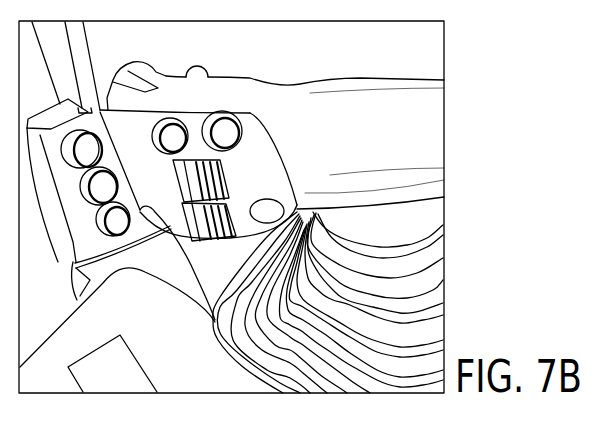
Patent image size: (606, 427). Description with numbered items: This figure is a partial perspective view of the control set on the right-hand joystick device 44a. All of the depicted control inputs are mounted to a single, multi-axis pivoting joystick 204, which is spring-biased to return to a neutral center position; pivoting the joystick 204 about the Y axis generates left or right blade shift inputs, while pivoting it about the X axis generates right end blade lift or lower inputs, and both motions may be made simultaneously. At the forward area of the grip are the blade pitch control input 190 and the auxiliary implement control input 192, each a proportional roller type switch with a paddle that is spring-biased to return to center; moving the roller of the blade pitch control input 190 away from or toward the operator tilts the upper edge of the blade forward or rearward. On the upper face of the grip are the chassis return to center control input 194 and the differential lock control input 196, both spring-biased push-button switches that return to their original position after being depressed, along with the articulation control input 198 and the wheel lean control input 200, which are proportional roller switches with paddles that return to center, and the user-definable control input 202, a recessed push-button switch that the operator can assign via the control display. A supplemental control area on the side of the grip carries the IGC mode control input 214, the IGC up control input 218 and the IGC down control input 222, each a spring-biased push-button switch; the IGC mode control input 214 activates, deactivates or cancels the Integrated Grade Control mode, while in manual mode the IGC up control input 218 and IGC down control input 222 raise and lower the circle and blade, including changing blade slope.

The right-hand joystick device 44a is at (394, 82).
The blade pitch control input 190 is at (200, 68).
The auxiliary implement control input 192 is at (127, 72).
The chassis return to center control input 194 is at (217, 132).
The differential lock control input 196 is at (167, 142).
The articulation control input 198 is at (210, 182).
The wheel lean control input 200 is at (190, 222).
The user-definable control input 202 is at (272, 208).
The multi-axis pivoting joystick 204 is at (417, 220).
The IGC mode control input 214 is at (80, 157).
The IGC up control input 218 is at (100, 188).
The IGC down control input 222 is at (110, 228).